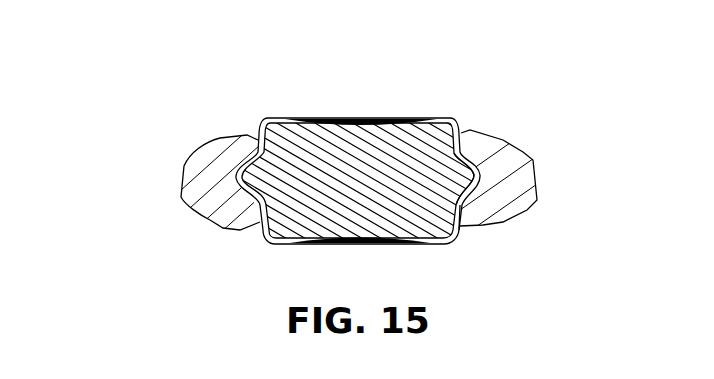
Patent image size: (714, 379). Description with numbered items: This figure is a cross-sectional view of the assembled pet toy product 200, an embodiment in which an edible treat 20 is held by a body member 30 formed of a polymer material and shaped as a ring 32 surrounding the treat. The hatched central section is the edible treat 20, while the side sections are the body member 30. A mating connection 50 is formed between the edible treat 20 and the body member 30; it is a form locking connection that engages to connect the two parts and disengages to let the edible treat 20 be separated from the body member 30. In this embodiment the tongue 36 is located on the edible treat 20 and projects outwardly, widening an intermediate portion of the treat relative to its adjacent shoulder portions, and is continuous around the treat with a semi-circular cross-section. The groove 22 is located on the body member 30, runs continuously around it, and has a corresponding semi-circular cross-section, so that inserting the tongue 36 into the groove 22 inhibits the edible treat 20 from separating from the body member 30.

The pet toy product 200 is at (165, 127).
The edible treat 20 is at (357, 118).
The mating connection 50 is at (465, 126).
The body member 30 is at (172, 201).
The ring 32 is at (533, 160).
The groove 22 is at (485, 173).
The tongue 36 is at (462, 178).